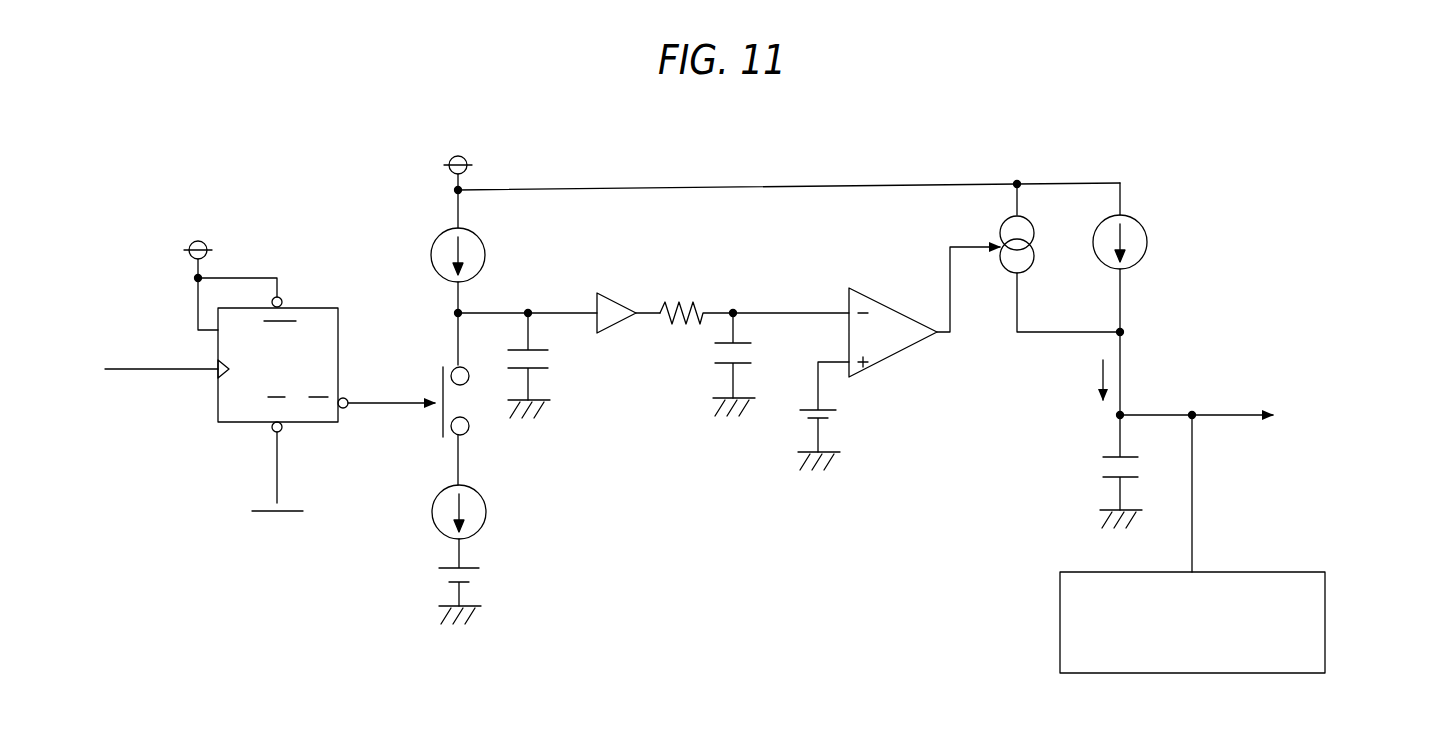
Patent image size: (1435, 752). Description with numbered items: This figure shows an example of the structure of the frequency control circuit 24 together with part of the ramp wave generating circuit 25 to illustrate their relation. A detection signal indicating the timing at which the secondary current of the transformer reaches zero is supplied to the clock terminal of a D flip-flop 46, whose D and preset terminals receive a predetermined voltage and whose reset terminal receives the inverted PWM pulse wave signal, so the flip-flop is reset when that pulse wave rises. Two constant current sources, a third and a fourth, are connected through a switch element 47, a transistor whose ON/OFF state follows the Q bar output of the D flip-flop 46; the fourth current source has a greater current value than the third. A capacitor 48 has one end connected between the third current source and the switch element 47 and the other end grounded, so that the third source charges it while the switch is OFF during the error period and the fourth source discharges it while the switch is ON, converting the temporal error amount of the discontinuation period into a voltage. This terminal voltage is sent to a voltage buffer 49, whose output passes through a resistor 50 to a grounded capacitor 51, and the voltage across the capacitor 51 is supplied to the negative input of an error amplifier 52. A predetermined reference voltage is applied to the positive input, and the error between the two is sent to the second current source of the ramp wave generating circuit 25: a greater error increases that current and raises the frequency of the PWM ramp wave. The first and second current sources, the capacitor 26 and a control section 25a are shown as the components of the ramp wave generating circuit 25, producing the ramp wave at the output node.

The frequency control circuit 24 is at (336, 152).
The ramp wave generating circuit 25 is at (1222, 336).
The control section 25a is at (1060, 625).
The capacitor 26 is at (1112, 452).
The D flip-flop 46 is at (310, 307).
The switch element 47 is at (480, 412).
The capacitor 48 is at (540, 372).
The voltage buffer 49 is at (620, 296).
The resistor 50 is at (692, 302).
The capacitor 51 is at (722, 365).
The error amplifier 52 is at (903, 356).